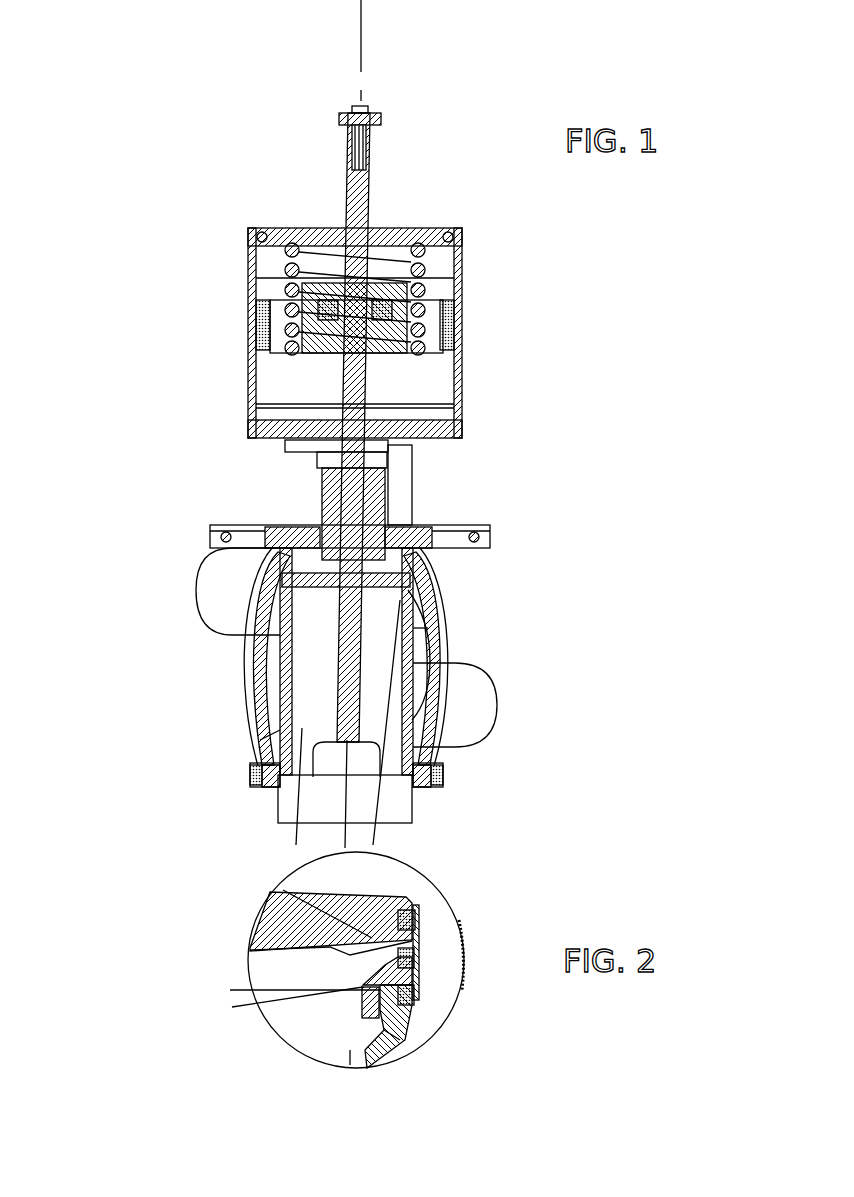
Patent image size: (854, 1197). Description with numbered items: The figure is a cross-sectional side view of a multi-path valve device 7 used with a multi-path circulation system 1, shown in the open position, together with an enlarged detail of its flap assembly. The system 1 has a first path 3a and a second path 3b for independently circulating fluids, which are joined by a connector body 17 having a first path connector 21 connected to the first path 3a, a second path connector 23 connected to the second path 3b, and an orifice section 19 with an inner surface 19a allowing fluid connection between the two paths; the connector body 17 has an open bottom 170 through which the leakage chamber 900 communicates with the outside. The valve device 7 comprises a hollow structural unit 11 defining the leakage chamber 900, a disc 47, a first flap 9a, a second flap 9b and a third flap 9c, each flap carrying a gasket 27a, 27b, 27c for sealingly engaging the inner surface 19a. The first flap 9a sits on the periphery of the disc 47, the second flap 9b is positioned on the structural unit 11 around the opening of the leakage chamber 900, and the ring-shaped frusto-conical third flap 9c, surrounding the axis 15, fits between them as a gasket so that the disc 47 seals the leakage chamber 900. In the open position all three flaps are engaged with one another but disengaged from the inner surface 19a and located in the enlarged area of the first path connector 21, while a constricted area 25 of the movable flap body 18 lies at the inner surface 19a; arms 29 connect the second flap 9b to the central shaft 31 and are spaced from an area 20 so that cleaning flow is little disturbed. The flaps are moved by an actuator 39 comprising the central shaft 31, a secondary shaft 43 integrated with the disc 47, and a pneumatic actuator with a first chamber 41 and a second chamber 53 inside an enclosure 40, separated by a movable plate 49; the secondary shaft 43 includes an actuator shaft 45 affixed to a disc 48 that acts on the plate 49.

In FIG. 1, the multi-path circulation system 1 is at (208, 243).
In FIG. 1, the axis 15 is at (363, 42).
In FIG. 1, the second chamber 53 is at (490, 198).
In FIG. 1, the disc 48 is at (278, 292).
In FIG. 1, the actuator 39 is at (457, 302).
In FIG. 1, the movable plate 49 is at (458, 355).
In FIG. 1, the actuator shaft 45 is at (320, 385).
In FIG. 1, the first chamber 41 is at (272, 380).
In FIG. 1, the enclosure 40 is at (462, 367).
In FIG. 1, the secondary shaft 43 is at (340, 490).
In FIG. 1, the disc 47 is at (395, 540).
In FIG. 2, the disc 47 is at (250, 940).
In FIG. 1, the third flap 9c is at (295, 548).
In FIG. 2, the third flap 9c is at (373, 958).
In FIG. 1, the first path connector 21 is at (420, 558).
In FIG. 2, the first path connector 21 is at (462, 918).
In FIG. 1, the hollow structural unit 11 is at (378, 605).
In FIG. 2, the hollow structural unit 11 is at (350, 1053).
In FIG. 1, the central shaft 31 is at (290, 588).
In FIG. 1, the connector body 17 is at (418, 622).
In FIG. 2, the connector body 17 is at (468, 938).
In FIG. 1, the leakage chamber 900 is at (430, 628).
In FIG. 1, the first path 3a is at (195, 601).
In FIG. 1, the second path 3b is at (470, 742).
In FIG. 1, the inner surface 19a is at (430, 642).
In FIG. 1, the orifice section 19 is at (445, 688).
In FIG. 1, the constricted area 25 is at (262, 645).
In FIG. 2, the constricted area 25 is at (390, 1060).
In FIG. 1, the second path connector 23 is at (255, 688).
In FIG. 1, the multi-path valve device 7 is at (255, 722).
In FIG. 1, the flap body 18 is at (268, 742).
In FIG. 2, the flap body 18 is at (352, 988).
In FIG. 1, the open bottom 170 is at (422, 812).
In FIG. 1, the arms 29 is at (305, 830).
In FIG. 2, the gasket 27a is at (413, 910).
In FIG. 2, the gasket 27b is at (414, 982).
In FIG. 2, the gasket 27c is at (413, 962).
In FIG. 2, the first flap 9a is at (272, 900).
In FIG. 2, the second flap 9b is at (355, 1005).
In FIG. 1, the area 20 is at (346, 661).
In FIG. 2, the area 20 is at (273, 1017).